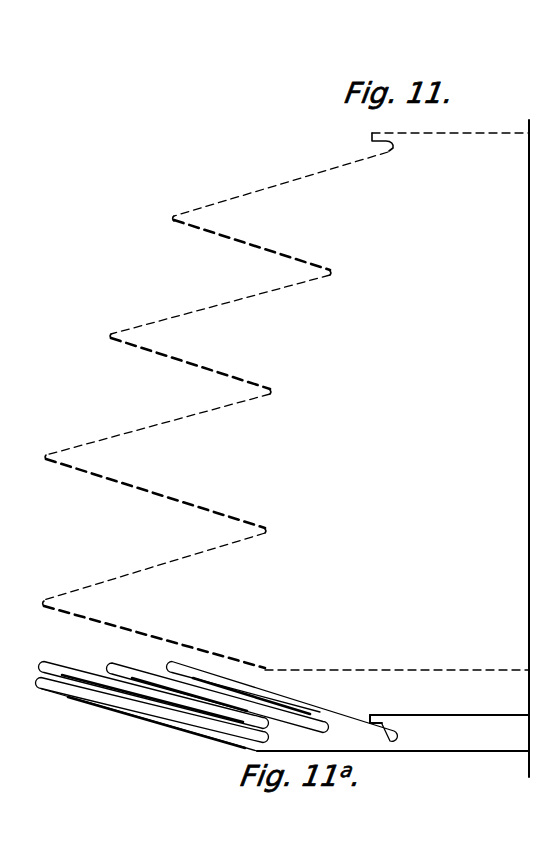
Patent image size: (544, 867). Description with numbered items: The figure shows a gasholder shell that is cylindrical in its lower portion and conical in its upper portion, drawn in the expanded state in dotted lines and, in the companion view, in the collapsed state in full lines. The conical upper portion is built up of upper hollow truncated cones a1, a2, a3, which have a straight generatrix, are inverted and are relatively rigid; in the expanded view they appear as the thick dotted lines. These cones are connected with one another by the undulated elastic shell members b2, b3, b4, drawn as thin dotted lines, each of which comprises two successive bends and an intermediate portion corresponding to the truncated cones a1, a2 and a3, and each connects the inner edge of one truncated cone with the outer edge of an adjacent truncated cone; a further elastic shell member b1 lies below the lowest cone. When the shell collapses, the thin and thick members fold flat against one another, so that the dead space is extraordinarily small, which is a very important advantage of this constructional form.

The hollow truncated cone a1 is at (155, 494).
The hollow truncated cone a2 is at (190, 364).
The hollow truncated cone a3 is at (252, 245).
The undulated elastic shell member b1 is at (154, 566).
The undulated elastic shell member b2 is at (158, 424).
The undulated elastic shell member b3 is at (220, 304).
The undulated elastic shell member b4 is at (281, 184).